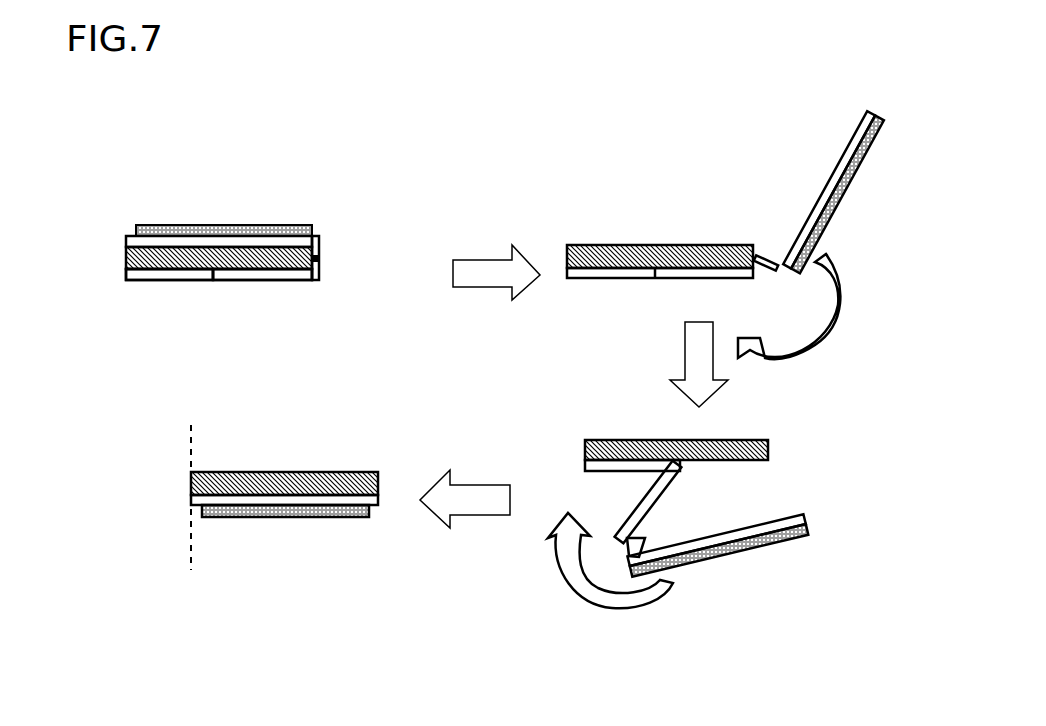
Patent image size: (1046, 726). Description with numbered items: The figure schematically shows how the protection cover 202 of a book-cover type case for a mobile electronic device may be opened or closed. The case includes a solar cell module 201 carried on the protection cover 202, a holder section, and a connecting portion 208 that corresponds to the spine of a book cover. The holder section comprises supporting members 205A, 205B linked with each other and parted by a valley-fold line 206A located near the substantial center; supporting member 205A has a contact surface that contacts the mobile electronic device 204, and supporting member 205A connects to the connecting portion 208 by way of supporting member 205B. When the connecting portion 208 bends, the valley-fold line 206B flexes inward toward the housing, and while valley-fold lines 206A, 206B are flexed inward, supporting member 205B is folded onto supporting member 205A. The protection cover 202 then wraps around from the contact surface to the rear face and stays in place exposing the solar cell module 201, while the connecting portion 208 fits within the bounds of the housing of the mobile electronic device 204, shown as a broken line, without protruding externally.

The solar cell module 201 is at (221, 226).
The protection cover 202 is at (126, 240).
The mobile electronic device 204 is at (126, 270).
The supporting member 205A is at (150, 283).
The supporting member 205B is at (280, 280).
The valley-fold line 206A is at (212, 289).
The valley-fold line 206B is at (329, 252).
The connecting portion 208 is at (320, 236).